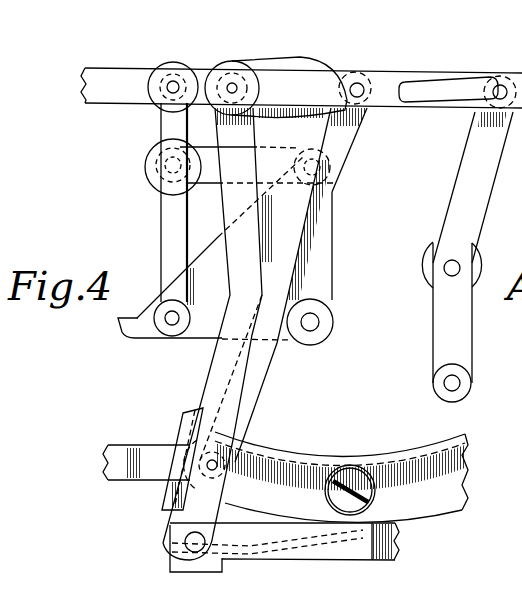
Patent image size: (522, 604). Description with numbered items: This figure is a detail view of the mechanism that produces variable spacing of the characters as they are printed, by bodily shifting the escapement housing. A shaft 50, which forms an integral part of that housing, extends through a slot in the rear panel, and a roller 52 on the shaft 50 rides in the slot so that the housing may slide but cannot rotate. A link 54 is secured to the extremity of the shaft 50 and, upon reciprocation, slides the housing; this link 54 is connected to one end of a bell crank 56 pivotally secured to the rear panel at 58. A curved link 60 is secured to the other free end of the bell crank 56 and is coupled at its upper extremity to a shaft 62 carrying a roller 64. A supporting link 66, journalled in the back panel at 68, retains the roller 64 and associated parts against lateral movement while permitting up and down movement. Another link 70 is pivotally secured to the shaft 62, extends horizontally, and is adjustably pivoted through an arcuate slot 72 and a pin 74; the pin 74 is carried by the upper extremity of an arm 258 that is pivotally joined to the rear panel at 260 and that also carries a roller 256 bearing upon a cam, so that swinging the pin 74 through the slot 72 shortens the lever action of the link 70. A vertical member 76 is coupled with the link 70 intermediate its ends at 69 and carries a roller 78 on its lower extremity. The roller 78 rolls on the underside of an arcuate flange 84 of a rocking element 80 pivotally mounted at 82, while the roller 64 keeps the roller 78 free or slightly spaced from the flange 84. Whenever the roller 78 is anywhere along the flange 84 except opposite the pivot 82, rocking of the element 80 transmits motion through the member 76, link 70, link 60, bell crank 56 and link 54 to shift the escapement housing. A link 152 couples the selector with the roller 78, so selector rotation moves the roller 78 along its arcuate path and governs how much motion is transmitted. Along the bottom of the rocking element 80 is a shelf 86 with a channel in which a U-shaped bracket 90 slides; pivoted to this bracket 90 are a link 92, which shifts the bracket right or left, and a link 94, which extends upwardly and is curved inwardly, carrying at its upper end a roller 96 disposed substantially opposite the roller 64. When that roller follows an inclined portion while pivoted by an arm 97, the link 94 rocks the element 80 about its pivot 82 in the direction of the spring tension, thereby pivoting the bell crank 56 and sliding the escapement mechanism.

The shaft 50 is at (170, 168).
The roller 52 is at (146, 168).
The link 54 is at (293, 133).
The bell crank 56 is at (322, 260).
The pivot 58 is at (314, 323).
The link 60 is at (167, 247).
The shaft 62 is at (172, 90).
The roller 64 is at (176, 62).
The supporting link 66 is at (297, 62).
The journal 68 is at (342, 66).
The coupling point 69 is at (365, 92).
The link 70 is at (393, 73).
The arcuate slot 72 is at (405, 100).
The pin 74 is at (505, 80).
The vertical member 76 is at (345, 152).
The roller 78 is at (255, 440).
The rocking element 80 is at (341, 478).
The pivot 82 is at (363, 492).
The arcuate flange 84 is at (367, 457).
The shelf 86 is at (312, 549).
The U-shaped bracket 90 is at (172, 568).
The link 92 is at (393, 543).
The link 94 is at (218, 334).
The roller 96 is at (240, 61).
The arm 97 is at (301, 88).
The link 152 is at (112, 445).
The roller 256 is at (428, 278).
The arm 258 is at (475, 223).
The pivot 260 is at (453, 385).